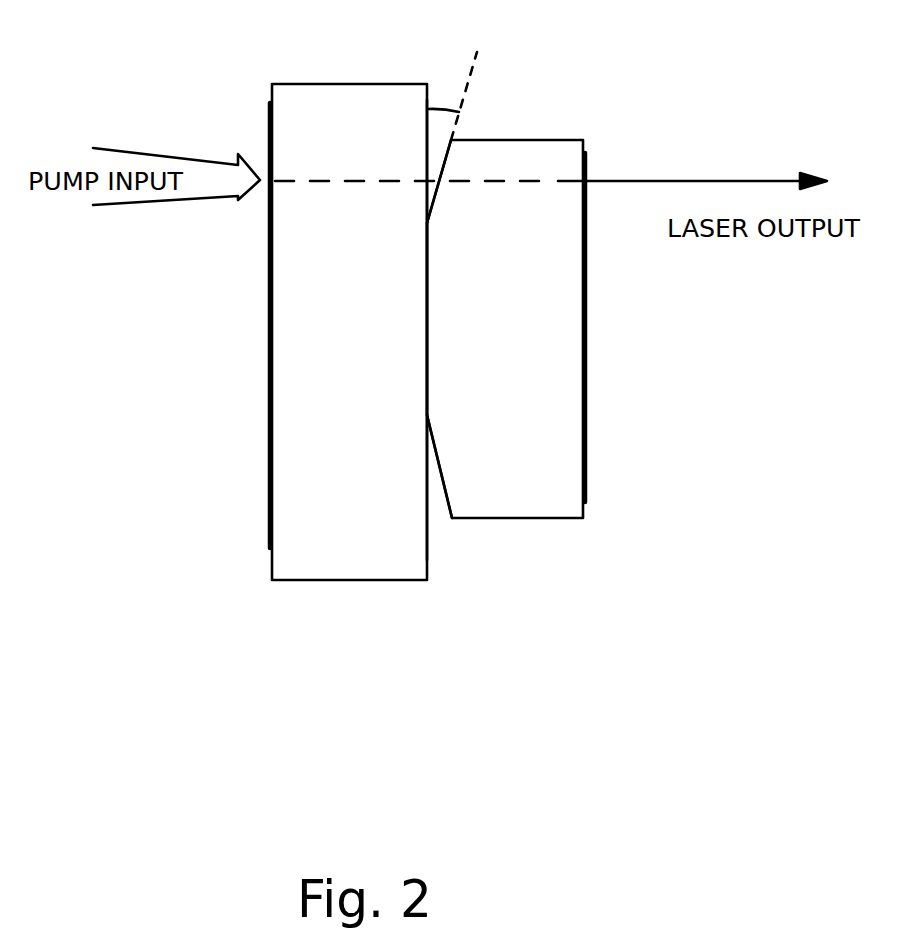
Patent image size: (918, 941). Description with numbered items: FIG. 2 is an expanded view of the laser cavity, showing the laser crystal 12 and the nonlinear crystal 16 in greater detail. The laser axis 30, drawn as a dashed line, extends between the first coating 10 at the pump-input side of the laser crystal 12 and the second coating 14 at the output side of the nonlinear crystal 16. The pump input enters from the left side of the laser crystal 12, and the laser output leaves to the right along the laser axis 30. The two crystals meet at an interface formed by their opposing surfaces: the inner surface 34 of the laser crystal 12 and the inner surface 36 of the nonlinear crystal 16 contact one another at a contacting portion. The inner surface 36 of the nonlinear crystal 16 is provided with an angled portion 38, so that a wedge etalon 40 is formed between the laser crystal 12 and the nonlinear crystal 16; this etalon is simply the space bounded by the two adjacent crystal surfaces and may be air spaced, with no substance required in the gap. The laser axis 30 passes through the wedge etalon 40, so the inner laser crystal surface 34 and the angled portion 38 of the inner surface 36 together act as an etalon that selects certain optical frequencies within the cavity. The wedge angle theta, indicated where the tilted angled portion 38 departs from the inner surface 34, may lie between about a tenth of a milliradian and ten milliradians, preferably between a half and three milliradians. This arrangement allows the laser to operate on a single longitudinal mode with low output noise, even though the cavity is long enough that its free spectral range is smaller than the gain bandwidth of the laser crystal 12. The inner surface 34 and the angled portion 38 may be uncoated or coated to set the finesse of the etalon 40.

The first coating 10 is at (268, 470).
The laser crystal 12 is at (342, 535).
The second coating 14 is at (583, 420).
The nonlinear crystal 16 is at (515, 470).
The laser axis 30 is at (532, 177).
The inner surface of the laser crystal 34 is at (425, 200).
The inner surface of the nonlinear crystal 36 is at (445, 472).
The angled portion 38 is at (435, 200).
The wedge etalon 40 is at (433, 163).